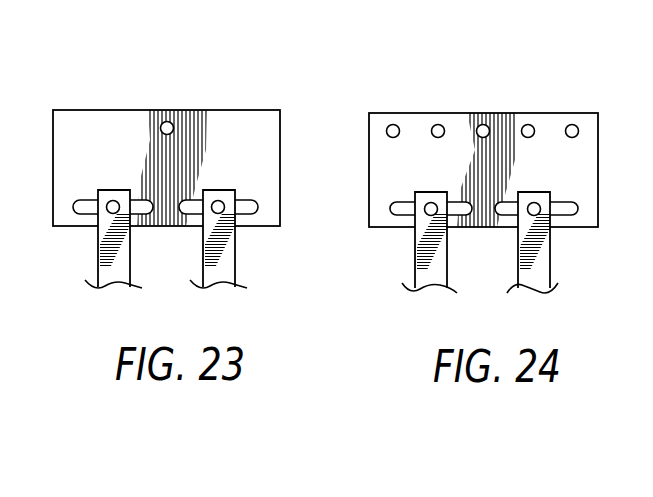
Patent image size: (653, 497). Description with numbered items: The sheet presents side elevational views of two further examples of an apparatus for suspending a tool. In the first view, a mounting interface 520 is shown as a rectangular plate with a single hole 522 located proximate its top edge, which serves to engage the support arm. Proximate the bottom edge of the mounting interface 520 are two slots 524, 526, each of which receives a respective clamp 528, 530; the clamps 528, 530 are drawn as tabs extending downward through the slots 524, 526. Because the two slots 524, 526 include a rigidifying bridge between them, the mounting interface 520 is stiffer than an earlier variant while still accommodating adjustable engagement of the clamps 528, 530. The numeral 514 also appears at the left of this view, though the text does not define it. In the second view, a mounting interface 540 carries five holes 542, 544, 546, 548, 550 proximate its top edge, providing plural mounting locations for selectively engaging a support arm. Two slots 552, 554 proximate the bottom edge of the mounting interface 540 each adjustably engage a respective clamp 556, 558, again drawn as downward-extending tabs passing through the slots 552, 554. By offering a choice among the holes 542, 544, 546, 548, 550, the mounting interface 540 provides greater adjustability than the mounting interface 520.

In FIG. 23, the implant body 514 is at (16, 184).
In FIG. 23, the mounting interface 520 is at (50, 131).
In FIG. 23, the hole 522 is at (162, 124).
In FIG. 23, the slot 524 is at (83, 205).
In FIG. 23, the slot 526 is at (257, 209).
In FIG. 23, the clamp 528 is at (104, 271).
In FIG. 23, the clamp 530 is at (236, 262).
In FIG. 24, the mounting interface 540 is at (367, 132).
In FIG. 24, the hole 542 is at (393, 124).
In FIG. 24, the hole 544 is at (438, 124).
In FIG. 24, the hole 546 is at (483, 124).
In FIG. 24, the hole 548 is at (528, 124).
In FIG. 24, the hole 550 is at (572, 124).
In FIG. 24, the slot 552 is at (397, 205).
In FIG. 24, the slot 554 is at (565, 205).
In FIG. 24, the clamp 556 is at (444, 258).
In FIG. 24, the clamp 558 is at (548, 263).